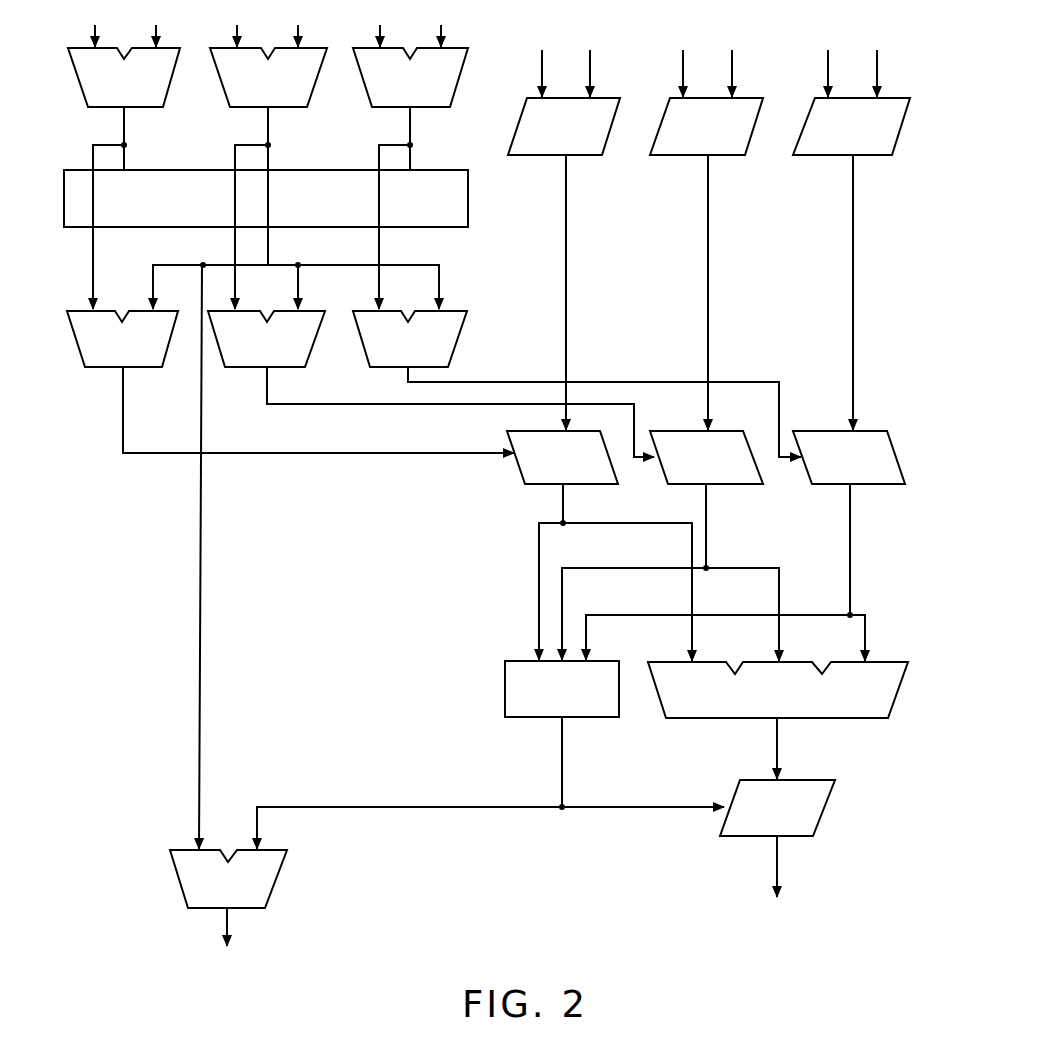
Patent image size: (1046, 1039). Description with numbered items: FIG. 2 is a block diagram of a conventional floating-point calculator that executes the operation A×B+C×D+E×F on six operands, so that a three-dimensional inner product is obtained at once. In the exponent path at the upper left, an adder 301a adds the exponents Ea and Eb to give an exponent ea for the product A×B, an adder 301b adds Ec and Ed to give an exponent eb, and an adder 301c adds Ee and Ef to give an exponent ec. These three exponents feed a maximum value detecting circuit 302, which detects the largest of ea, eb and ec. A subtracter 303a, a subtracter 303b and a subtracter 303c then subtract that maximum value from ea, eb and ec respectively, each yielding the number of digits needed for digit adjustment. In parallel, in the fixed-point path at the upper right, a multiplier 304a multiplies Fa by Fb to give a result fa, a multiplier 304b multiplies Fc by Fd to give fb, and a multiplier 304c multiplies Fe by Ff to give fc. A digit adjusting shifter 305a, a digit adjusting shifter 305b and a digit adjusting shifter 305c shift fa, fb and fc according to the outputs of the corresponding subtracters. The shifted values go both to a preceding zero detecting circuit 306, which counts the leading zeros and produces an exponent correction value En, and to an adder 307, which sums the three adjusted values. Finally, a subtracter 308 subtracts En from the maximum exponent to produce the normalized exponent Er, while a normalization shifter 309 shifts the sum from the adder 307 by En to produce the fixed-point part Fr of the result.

The adder 301a is at (150, 107).
The adder 301b is at (292, 107).
The adder 301c is at (432, 107).
The maximum value detecting circuit 302 is at (468, 205).
The subtracter 303a is at (100, 367).
The subtracter 303b is at (240, 367).
The subtracter 303c is at (363, 347).
The multiplier 304a is at (582, 155).
The multiplier 304b is at (724, 155).
The multiplier 304c is at (869, 155).
The digit adjusting shifter 305a is at (527, 484).
The digit adjusting shifter 305b is at (690, 484).
The digit adjusting shifter 305c is at (835, 484).
The preceding zero detecting circuit 306 is at (523, 717).
The adder 307 is at (700, 718).
The subtracter 308 is at (280, 872).
The normalization shifter 309 is at (735, 836).